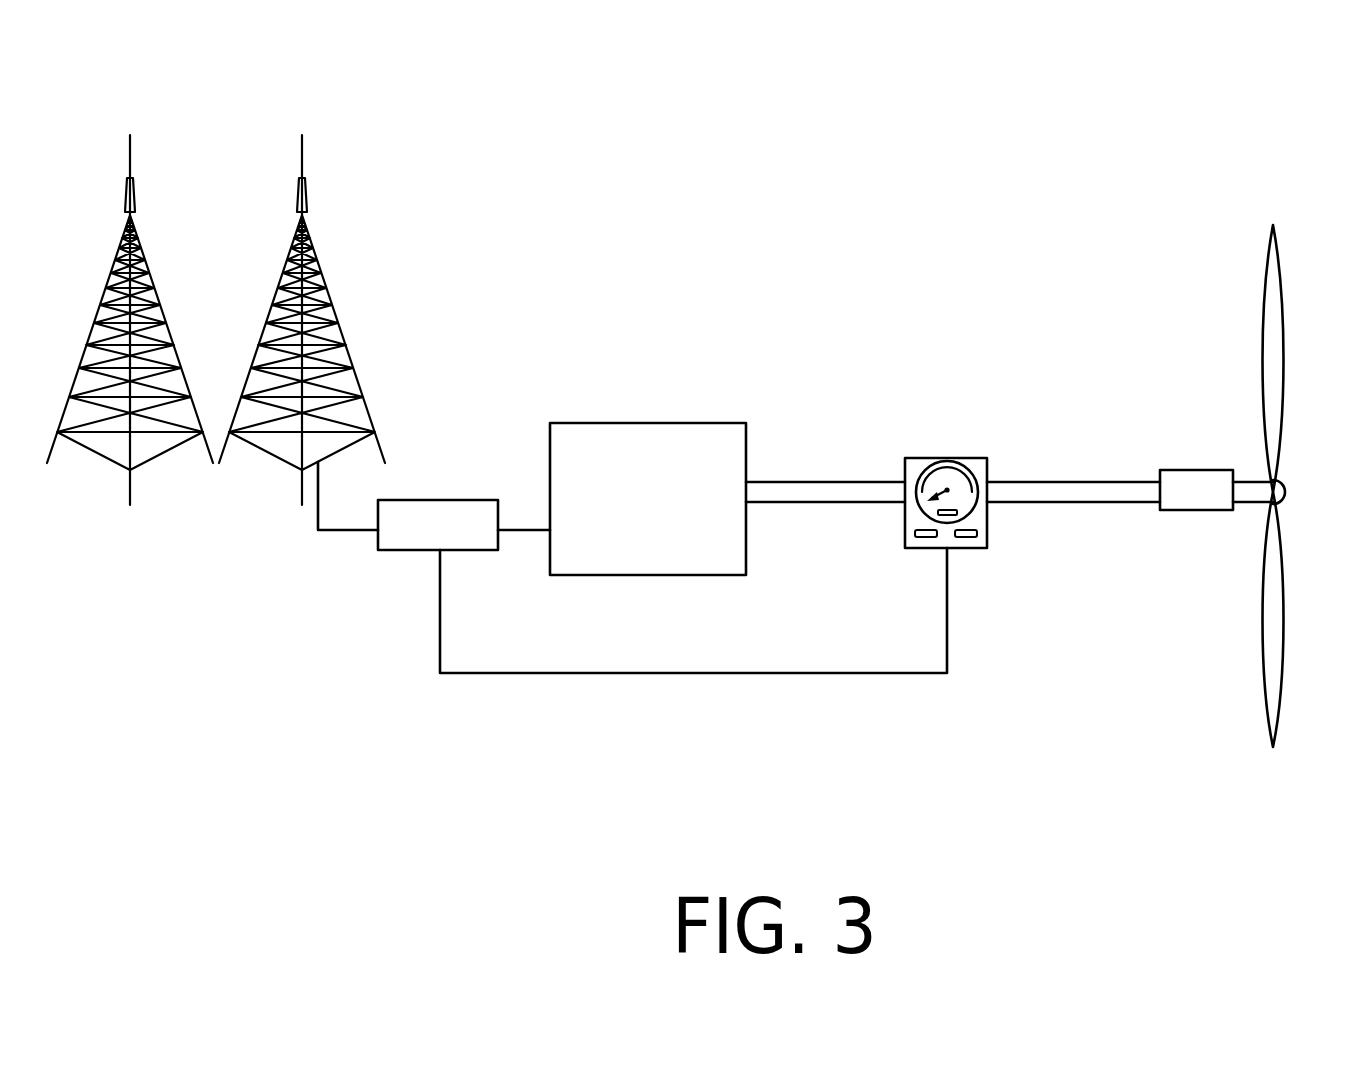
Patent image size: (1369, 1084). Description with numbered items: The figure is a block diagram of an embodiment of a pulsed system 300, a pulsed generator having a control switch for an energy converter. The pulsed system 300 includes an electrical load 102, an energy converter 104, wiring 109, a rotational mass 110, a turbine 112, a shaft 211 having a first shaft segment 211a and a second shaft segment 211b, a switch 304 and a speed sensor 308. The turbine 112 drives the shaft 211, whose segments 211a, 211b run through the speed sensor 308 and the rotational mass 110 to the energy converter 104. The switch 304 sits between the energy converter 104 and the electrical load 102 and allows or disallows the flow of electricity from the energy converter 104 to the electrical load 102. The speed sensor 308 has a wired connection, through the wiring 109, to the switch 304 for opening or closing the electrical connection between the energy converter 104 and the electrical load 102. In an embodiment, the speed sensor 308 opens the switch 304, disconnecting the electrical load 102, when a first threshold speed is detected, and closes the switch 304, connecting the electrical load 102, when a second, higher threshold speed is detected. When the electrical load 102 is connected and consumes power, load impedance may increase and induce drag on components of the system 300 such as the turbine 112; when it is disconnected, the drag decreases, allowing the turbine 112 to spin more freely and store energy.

The pulsed system 300 is at (694, 404).
The electrical load 102 is at (323, 275).
The energy converter 104 is at (568, 423).
The switch 304 is at (493, 500).
The wiring 109 is at (947, 630).
The shaft 211 is at (989, 431).
The first shaft segment 211a is at (1120, 503).
The second shaft segment 211b is at (815, 503).
The speed sensor 308 is at (977, 460).
The rotational mass 110 is at (1223, 470).
The turbine 112 is at (1281, 712).